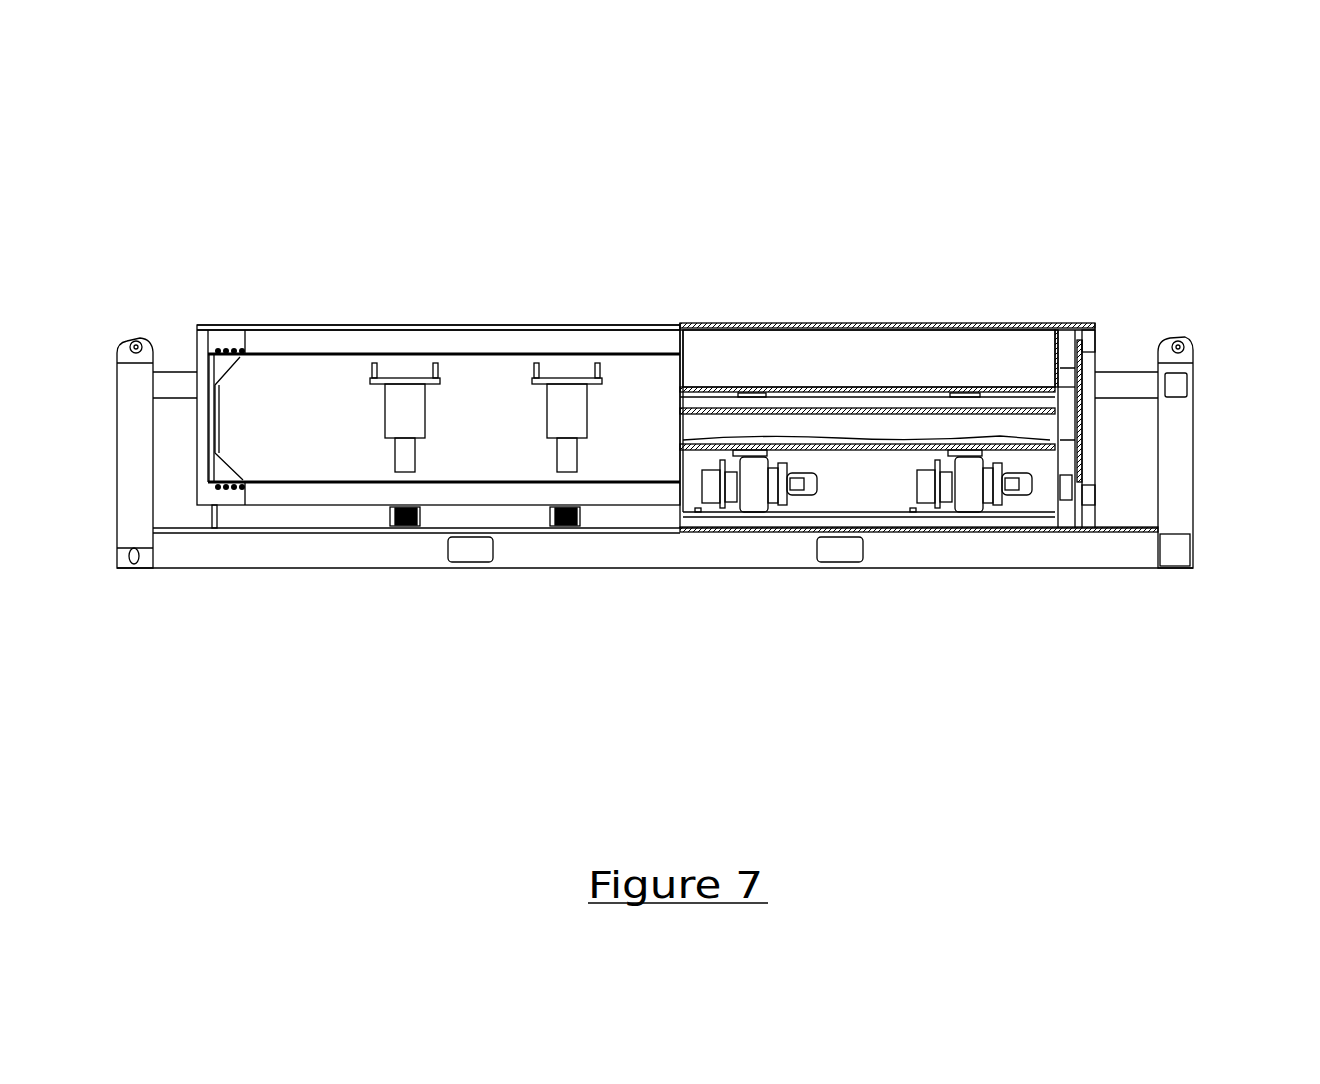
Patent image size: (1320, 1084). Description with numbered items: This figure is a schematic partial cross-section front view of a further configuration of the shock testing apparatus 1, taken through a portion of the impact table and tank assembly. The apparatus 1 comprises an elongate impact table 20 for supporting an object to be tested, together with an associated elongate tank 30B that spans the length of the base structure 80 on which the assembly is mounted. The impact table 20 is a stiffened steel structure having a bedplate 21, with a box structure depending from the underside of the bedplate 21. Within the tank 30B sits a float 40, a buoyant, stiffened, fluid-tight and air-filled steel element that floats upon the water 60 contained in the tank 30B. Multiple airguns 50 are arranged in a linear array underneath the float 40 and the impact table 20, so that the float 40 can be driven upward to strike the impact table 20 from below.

The shock testing apparatus 1 is at (270, 175).
The impact table 20 is at (865, 300).
The bedplate 21 is at (382, 322).
The elongate tank 30B is at (345, 445).
The float 40 is at (1032, 430).
The airguns 50 is at (752, 492).
The water 60 is at (1063, 440).
The base structure 80 is at (408, 578).